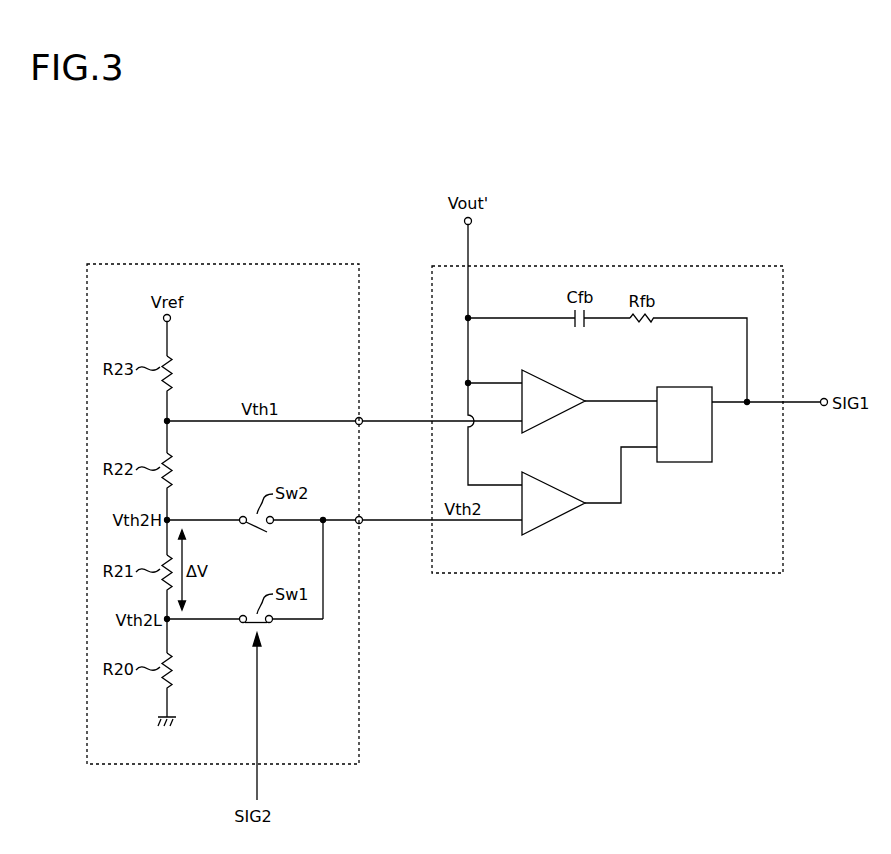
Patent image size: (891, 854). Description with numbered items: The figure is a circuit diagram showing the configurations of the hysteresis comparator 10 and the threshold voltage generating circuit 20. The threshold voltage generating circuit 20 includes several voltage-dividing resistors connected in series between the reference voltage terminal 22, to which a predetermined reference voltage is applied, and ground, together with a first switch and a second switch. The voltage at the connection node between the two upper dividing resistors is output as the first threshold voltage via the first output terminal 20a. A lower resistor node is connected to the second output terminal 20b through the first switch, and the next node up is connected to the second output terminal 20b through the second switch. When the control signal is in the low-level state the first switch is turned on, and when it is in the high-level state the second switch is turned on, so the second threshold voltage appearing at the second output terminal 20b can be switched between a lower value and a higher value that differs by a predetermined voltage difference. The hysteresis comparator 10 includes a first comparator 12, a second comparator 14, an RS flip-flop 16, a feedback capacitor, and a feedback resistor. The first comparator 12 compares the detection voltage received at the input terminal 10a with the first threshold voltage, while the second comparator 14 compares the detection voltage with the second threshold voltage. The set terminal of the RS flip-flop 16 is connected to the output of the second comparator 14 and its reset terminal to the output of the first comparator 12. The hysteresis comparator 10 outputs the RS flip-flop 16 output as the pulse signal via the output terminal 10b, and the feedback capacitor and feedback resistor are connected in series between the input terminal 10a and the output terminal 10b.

The hysteresis comparator 10 is at (607, 573).
The input terminal 10a is at (472, 223).
The output terminal 10b is at (826, 398).
The first comparator 12 is at (552, 424).
The second comparator 14 is at (552, 526).
The RS flip-flop 16 is at (685, 462).
The threshold voltage generating circuit 20 is at (360, 670).
The first output terminal 20a is at (360, 416).
The second output terminal 20b is at (360, 515).
The reference voltage terminal 22 is at (171, 318).